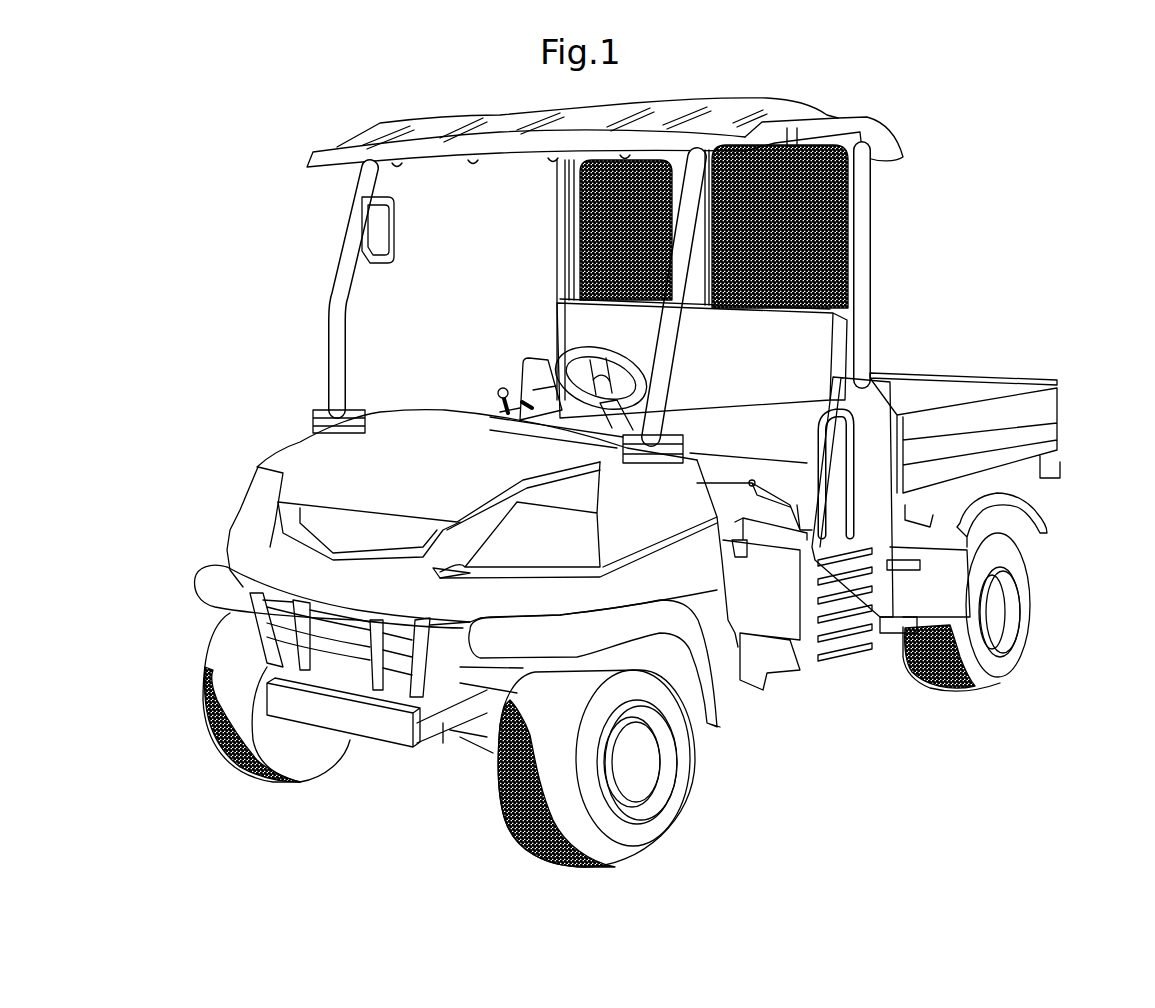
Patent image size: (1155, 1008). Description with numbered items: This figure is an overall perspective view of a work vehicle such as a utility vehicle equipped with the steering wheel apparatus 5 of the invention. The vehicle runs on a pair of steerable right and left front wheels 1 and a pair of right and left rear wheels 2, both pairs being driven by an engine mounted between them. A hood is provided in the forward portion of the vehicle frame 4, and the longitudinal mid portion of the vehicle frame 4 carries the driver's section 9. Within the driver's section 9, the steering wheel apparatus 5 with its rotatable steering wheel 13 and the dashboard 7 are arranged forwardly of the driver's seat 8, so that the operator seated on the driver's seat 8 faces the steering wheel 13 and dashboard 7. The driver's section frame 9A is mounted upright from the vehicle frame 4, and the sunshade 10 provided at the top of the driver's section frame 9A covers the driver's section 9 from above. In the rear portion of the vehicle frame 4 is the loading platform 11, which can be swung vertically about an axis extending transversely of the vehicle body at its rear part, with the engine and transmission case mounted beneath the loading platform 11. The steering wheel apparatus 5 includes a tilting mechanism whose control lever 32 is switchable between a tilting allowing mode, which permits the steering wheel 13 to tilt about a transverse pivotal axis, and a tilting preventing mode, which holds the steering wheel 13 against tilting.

The front wheels 1 is at (217, 650).
The rear wheels 2 is at (960, 690).
The vehicle frame 4 is at (380, 737).
The steering wheel apparatus 5 is at (547, 380).
The dashboard 7 is at (440, 413).
The driver's seat 8 is at (723, 463).
The driver's section 9 is at (822, 348).
The driver's section frame 9A is at (335, 280).
The sunshade 10 is at (350, 136).
The loading platform 11 is at (1058, 428).
The steering wheel 13 is at (587, 345).
The control lever 32 is at (640, 403).